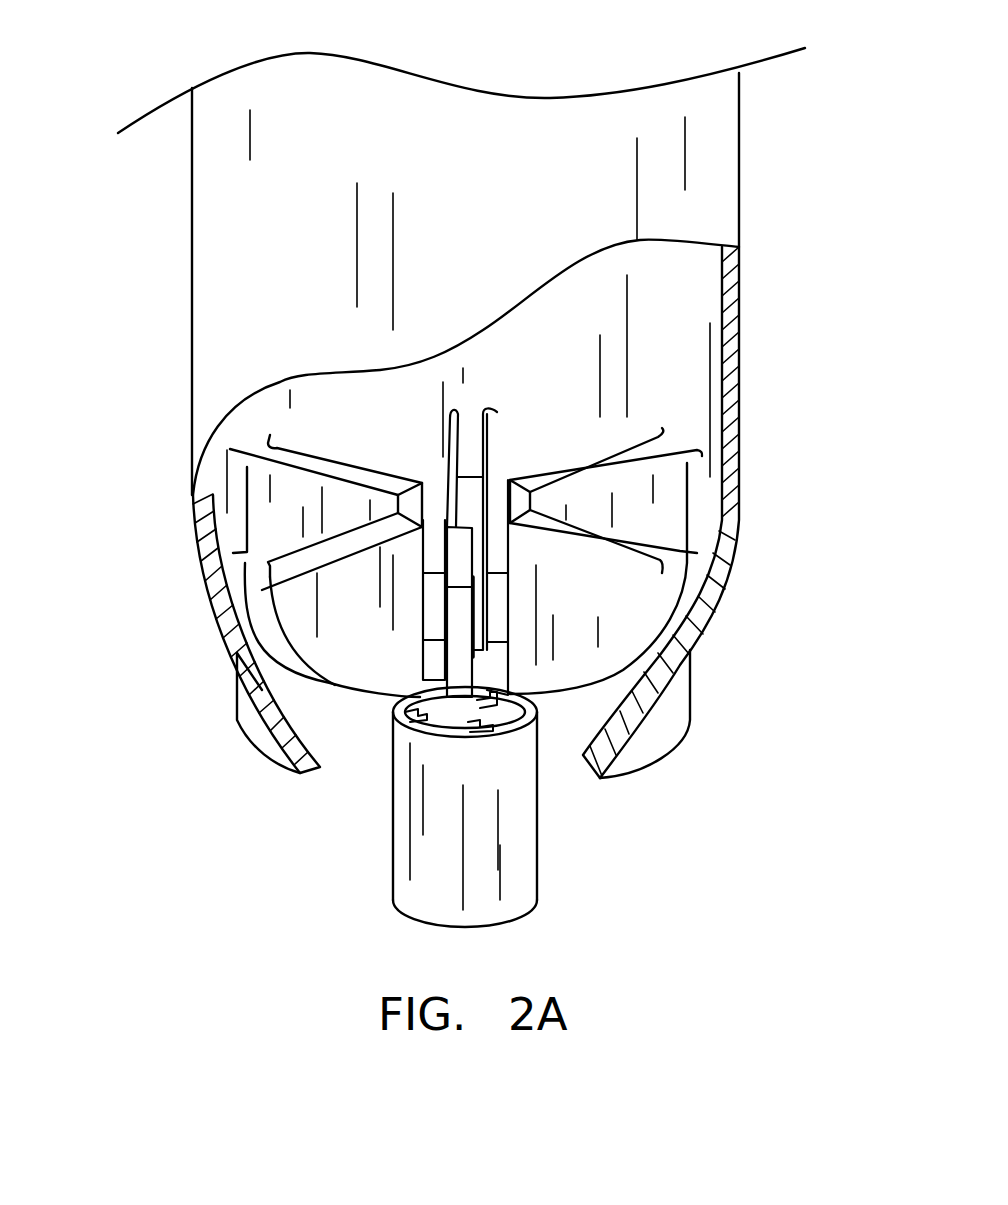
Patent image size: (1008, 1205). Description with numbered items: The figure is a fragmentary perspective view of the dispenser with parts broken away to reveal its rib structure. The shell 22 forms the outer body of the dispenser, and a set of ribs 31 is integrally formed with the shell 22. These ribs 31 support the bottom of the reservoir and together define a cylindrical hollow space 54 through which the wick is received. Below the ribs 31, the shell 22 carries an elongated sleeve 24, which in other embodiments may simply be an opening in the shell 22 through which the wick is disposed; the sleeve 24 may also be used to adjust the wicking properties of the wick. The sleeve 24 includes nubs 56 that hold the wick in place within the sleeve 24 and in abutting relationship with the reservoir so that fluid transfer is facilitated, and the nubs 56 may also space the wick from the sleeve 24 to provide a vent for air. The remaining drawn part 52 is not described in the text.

The shell 22 is at (230, 220).
The cylindrical hollow space 54 is at (440, 490).
The ribs 31 is at (587, 610).
The legs 52 is at (265, 735).
The sleeve 24 is at (402, 845).
The nubs 56 is at (450, 728).